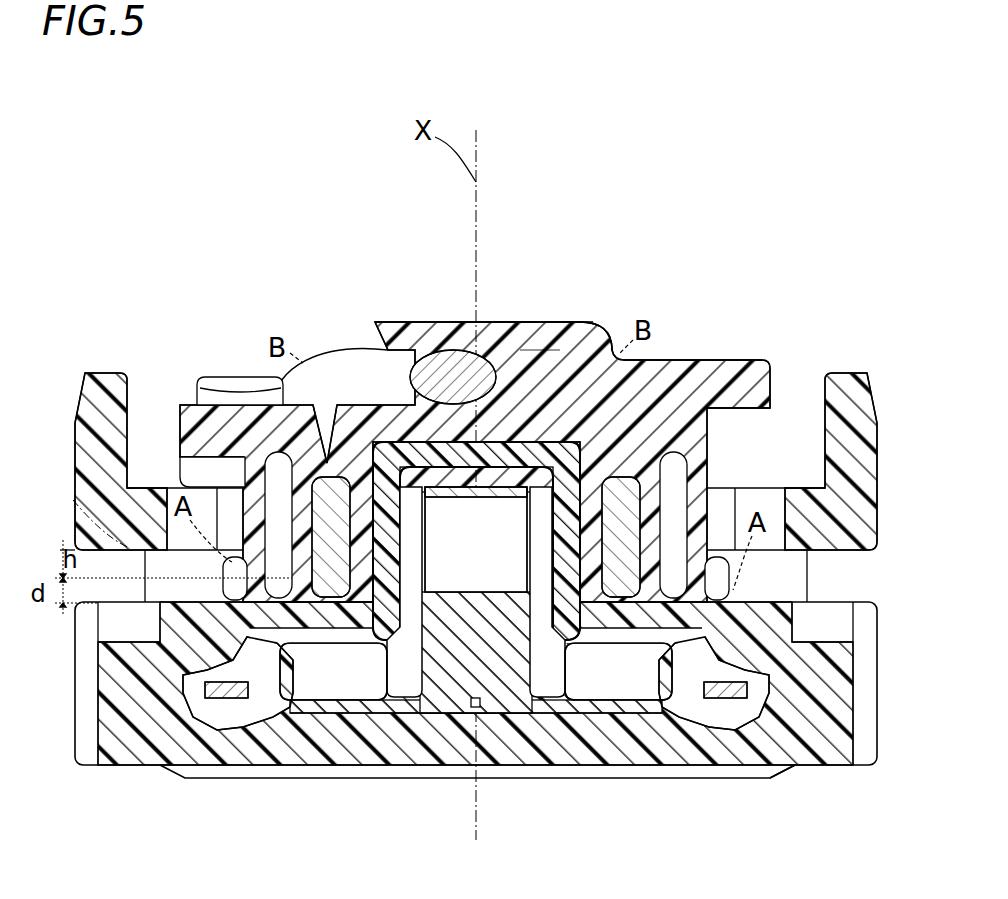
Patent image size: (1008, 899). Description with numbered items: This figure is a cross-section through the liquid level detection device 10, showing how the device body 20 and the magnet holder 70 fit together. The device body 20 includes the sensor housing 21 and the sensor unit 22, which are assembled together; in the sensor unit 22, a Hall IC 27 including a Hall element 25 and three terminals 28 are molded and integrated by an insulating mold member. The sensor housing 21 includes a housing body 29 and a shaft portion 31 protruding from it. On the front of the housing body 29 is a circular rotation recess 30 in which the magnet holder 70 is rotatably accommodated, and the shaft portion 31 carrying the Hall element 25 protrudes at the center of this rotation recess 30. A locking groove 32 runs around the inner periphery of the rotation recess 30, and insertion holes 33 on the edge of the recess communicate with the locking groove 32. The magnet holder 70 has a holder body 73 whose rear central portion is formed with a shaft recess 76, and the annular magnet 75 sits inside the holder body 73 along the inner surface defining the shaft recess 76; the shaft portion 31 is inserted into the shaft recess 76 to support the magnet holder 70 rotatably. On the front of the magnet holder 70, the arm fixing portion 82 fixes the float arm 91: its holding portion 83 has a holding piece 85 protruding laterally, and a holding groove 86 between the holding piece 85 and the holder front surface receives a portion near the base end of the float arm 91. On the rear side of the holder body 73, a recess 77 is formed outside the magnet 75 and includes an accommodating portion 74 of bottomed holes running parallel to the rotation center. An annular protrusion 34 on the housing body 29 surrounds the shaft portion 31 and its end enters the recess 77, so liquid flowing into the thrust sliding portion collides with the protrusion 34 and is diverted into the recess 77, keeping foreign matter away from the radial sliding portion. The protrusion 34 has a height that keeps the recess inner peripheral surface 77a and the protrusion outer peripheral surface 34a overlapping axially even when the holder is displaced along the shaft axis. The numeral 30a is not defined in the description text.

The liquid level detection device 10 is at (239, 190).
The device body 20 is at (431, 275).
The sensor housing 21 is at (120, 770).
The sensor unit 22 is at (540, 745).
The Hall element 25 is at (560, 348).
The Hall IC 27 is at (743, 596).
The terminals 28 is at (233, 700).
The housing body 29 is at (400, 737).
The rotation recess 30 is at (783, 505).
The holder cavity 30a is at (403, 560).
The shaft portion 31 is at (543, 352).
The locking groove 32 is at (97, 505).
The insertion holes 33 is at (135, 378).
The protrusion 34 is at (190, 482).
The protrusion outer peripheral surface 34a is at (793, 773).
The magnet holder 70 is at (600, 324).
The holder body 73 is at (690, 357).
The accommodating portion 74 is at (277, 468).
The magnet 75 is at (622, 472).
The shaft recess 76 is at (521, 716).
The recess 77 is at (330, 705).
The recess inner peripheral surface 77a is at (666, 645).
The arm fixing portion 82 is at (522, 321).
The holding portion 83 is at (500, 320).
The holding piece 85 is at (410, 320).
The holding groove 86 is at (412, 380).
The float arm 91 is at (345, 335).